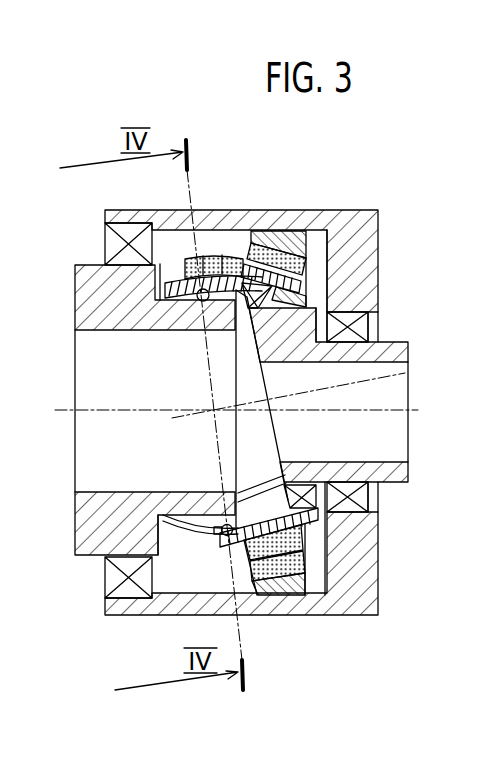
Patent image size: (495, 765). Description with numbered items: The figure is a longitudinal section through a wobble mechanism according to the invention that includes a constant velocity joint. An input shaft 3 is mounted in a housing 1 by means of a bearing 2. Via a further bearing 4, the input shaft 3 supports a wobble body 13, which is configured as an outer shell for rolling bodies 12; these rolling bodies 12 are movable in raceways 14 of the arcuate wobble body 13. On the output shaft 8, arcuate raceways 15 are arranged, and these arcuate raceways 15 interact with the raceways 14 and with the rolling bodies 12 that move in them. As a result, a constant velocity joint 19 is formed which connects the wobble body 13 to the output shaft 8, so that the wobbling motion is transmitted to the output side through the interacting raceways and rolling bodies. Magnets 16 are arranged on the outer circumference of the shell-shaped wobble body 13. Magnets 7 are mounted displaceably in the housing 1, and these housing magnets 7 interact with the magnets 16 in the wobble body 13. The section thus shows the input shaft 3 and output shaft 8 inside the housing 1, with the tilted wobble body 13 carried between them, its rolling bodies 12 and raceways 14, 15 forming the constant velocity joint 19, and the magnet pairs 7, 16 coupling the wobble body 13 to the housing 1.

The housing 1 is at (347, 222).
The bearing 2 is at (350, 323).
The input shaft 3 is at (400, 376).
The bearing 4 is at (327, 522).
The magnets 7 is at (280, 238).
The output shaft 8 is at (83, 349).
The rolling bodies 12 is at (217, 255).
The wobble body 13 is at (178, 282).
The raceways 14 is at (245, 273).
The arcuate raceways 15 is at (183, 520).
The magnets 16 is at (272, 595).
The constant velocity joint 19 is at (170, 577).